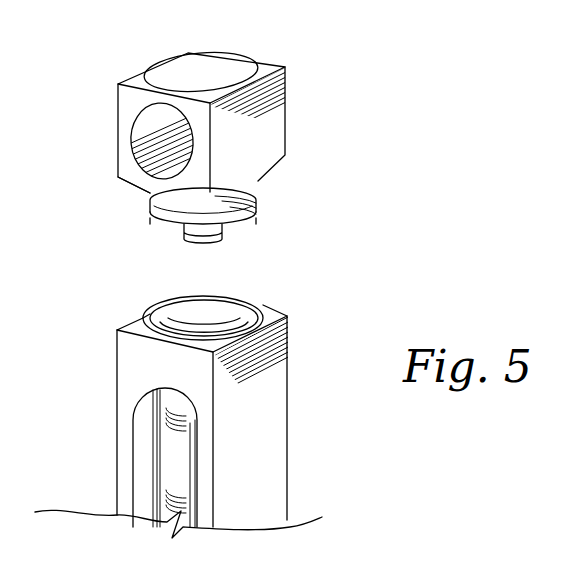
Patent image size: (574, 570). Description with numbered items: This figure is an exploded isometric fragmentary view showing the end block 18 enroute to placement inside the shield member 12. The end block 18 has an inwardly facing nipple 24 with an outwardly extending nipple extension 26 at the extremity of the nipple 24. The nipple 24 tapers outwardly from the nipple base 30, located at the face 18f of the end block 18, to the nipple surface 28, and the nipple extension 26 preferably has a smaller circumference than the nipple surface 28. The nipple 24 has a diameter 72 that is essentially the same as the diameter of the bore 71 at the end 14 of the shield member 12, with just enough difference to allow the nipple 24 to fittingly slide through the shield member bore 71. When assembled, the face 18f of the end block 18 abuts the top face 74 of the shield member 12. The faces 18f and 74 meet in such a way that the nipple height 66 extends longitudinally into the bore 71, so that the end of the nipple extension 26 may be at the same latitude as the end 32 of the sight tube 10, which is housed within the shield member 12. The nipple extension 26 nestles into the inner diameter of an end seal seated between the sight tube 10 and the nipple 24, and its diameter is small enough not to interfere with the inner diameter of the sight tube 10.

The end block 18 is at (318, 73).
The face of end block 18f is at (121, 181).
The nipple extension 26 is at (177, 231).
The nipple surface 28 is at (256, 248).
The nipple base 30 is at (259, 182).
The nipple 24 is at (327, 267).
The nipple height 66 is at (303, 153).
The diameter of nipple 72 is at (150, 216).
The end of shield member 14 is at (147, 368).
The end of sight tube 32 is at (248, 297).
The bore of shield member 71 is at (200, 333).
The top face of shield member 74 is at (143, 311).
The sight tube 10 is at (173, 463).
The shield member 12 is at (313, 458).